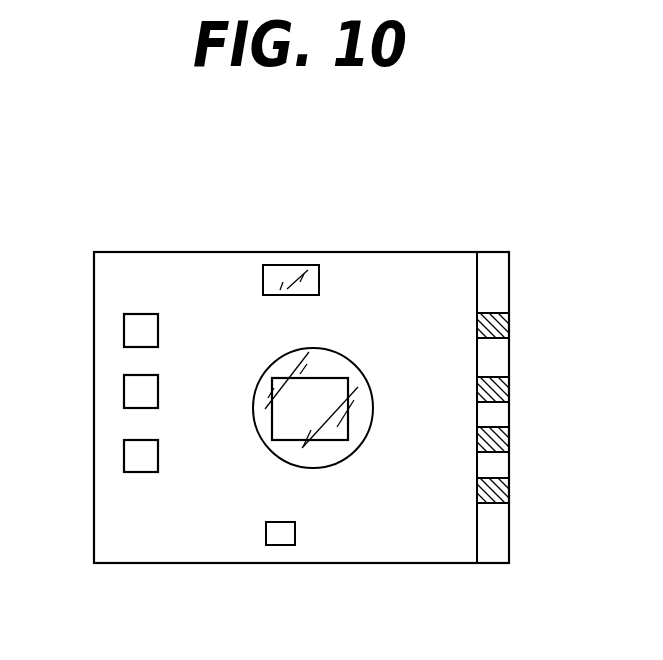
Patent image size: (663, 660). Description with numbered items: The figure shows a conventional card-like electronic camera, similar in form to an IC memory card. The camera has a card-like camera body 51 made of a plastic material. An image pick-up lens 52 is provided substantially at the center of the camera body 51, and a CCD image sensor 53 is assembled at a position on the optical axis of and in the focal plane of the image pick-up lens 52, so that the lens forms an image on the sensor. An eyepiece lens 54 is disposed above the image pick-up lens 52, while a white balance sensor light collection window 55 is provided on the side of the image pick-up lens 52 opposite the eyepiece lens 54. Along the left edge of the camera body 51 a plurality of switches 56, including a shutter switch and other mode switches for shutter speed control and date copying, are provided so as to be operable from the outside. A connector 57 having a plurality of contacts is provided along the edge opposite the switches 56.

The camera body 51 is at (447, 550).
The image pick-up lens 52 is at (350, 452).
The CCD image sensor 53 is at (352, 390).
The eyepiece lens 54 is at (292, 265).
The white balance sensor light collection window 55 is at (283, 546).
The switches 56 is at (124, 330).
The connector 57 is at (510, 327).